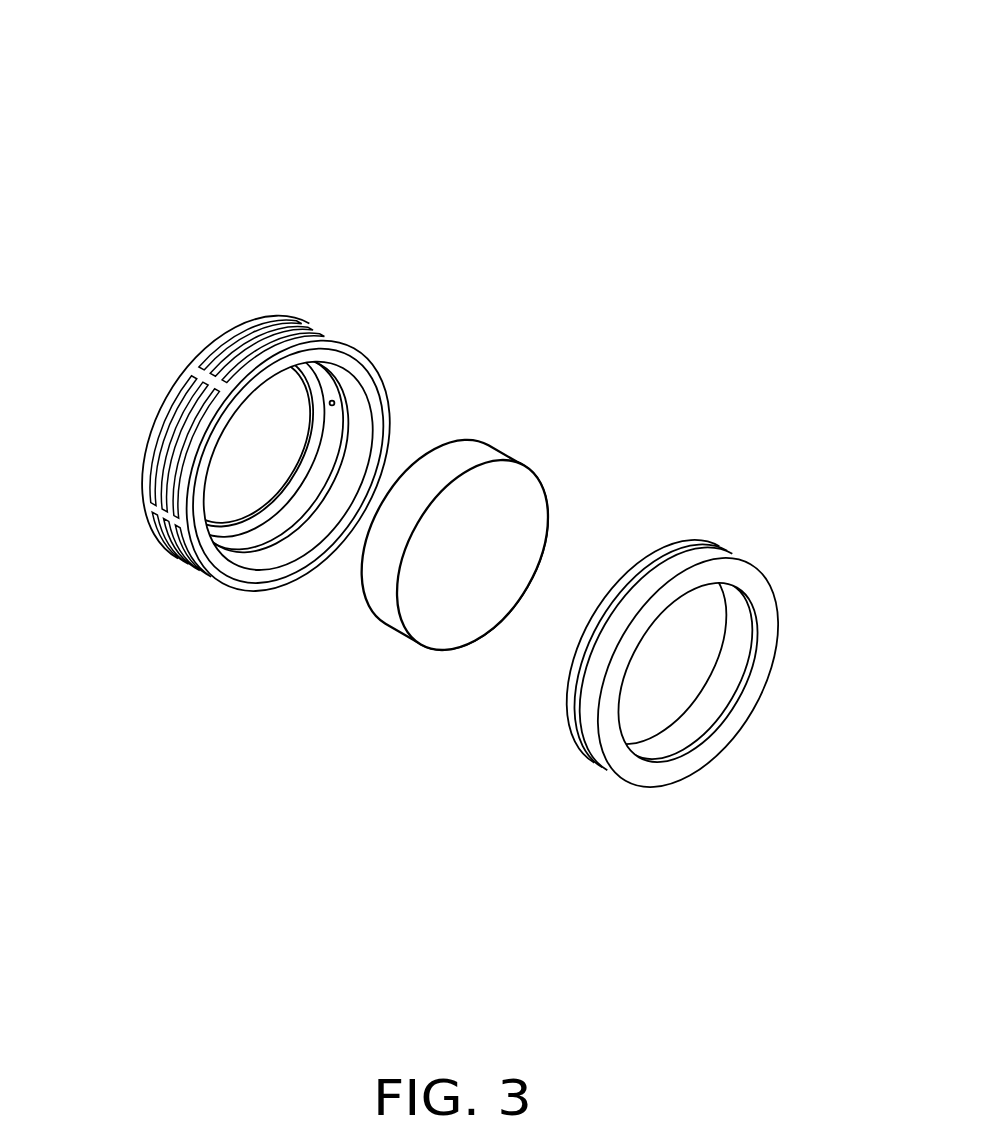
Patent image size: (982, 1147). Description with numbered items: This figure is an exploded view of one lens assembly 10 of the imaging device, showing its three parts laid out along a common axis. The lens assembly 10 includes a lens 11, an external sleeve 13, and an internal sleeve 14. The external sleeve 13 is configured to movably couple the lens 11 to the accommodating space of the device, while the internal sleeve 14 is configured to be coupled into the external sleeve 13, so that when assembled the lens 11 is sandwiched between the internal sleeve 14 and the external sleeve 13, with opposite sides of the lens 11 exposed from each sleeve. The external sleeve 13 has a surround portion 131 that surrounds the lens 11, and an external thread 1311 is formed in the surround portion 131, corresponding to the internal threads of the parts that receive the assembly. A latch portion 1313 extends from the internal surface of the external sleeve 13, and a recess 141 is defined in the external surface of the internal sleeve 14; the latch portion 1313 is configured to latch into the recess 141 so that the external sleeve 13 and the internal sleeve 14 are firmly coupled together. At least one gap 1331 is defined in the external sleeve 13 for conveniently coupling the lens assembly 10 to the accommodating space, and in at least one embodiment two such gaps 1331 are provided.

The lens assembly 10 is at (560, 56).
The lens 11 is at (425, 632).
The external sleeve 13 is at (266, 472).
The surround portion 131 is at (265, 568).
The external thread 1311 is at (170, 468).
The latch portion 1313 is at (238, 565).
The gap 1331 is at (337, 404).
The internal sleeve 14 is at (650, 647).
The recess 141 is at (580, 703).